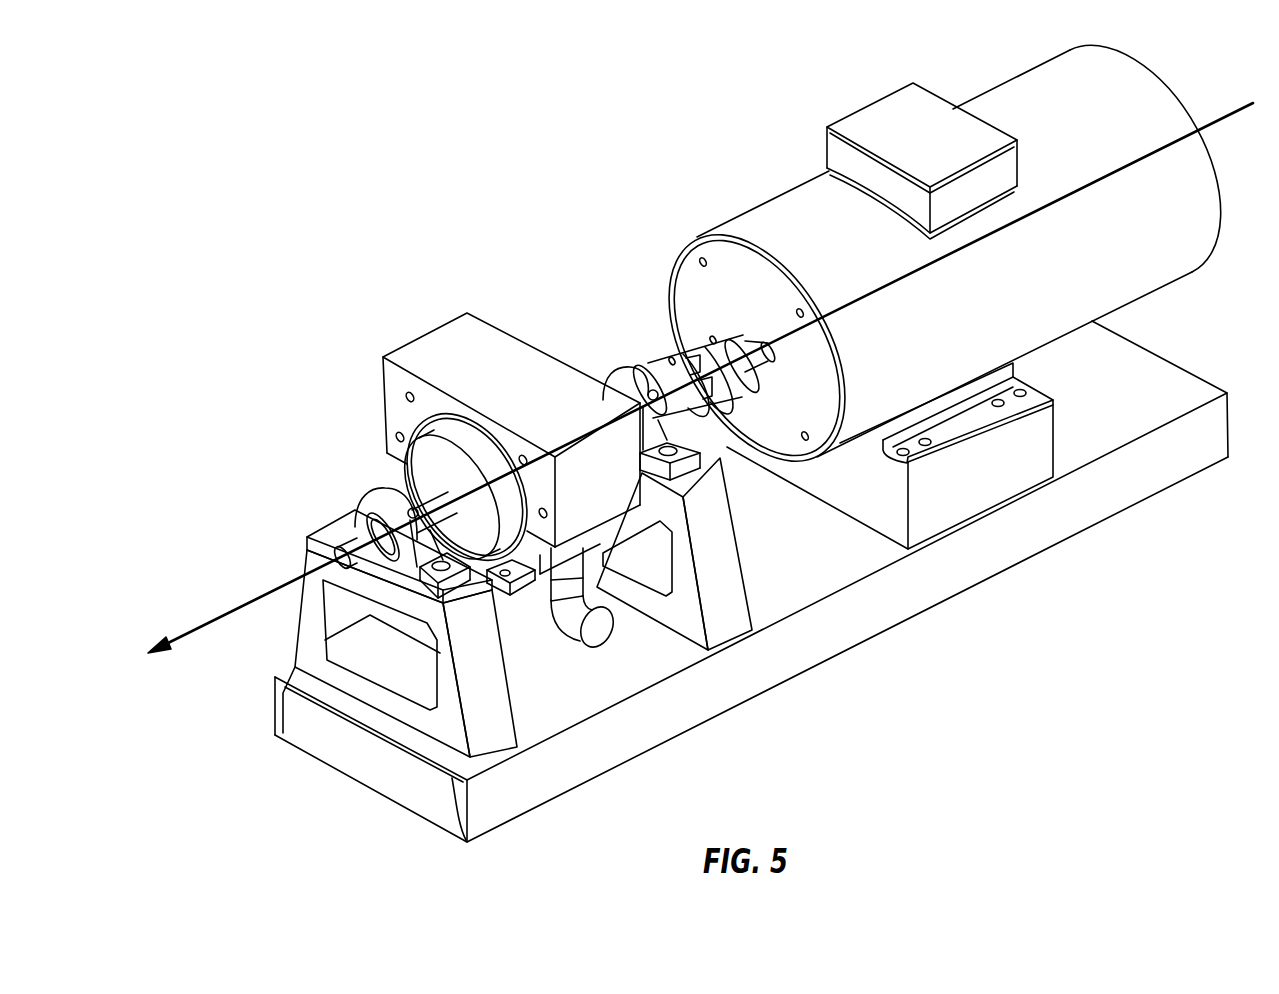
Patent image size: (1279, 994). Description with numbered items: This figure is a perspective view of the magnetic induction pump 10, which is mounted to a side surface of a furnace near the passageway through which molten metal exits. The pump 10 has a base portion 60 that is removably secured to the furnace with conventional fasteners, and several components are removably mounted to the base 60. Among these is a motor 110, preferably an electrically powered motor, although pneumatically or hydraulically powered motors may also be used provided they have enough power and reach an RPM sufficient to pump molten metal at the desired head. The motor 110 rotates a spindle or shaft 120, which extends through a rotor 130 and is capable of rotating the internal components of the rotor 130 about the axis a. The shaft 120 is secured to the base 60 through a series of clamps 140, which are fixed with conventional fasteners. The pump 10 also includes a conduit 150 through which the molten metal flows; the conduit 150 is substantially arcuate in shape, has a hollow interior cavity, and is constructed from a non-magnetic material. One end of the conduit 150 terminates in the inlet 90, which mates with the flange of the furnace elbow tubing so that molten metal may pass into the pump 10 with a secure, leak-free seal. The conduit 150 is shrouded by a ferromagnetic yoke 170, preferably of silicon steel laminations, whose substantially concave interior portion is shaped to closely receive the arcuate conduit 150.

The magnetic induction pump 10 is at (628, 70).
The base portion 60 is at (1062, 518).
The inlet 90 is at (597, 628).
The motor 110 is at (1004, 300).
The shaft 120 is at (747, 343).
The rotor 130 is at (463, 540).
The clamps 140 is at (397, 488).
The conduit 150 is at (533, 567).
The ferromagnetic yoke 170 is at (452, 335).